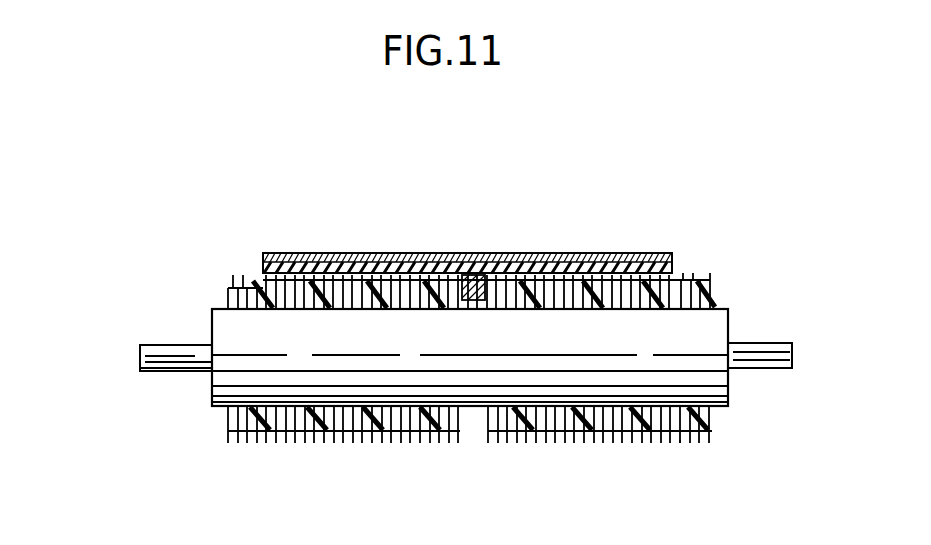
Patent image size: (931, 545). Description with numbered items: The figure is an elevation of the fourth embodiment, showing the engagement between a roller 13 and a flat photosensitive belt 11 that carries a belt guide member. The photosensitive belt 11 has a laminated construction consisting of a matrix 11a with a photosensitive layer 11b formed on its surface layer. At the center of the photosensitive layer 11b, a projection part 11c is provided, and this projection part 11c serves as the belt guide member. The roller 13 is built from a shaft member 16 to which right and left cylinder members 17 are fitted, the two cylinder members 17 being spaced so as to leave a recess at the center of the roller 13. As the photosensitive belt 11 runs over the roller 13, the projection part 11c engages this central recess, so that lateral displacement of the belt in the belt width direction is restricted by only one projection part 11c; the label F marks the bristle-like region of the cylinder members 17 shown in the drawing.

The photosensitive belt 11 is at (352, 248).
The matrix 11a is at (665, 256).
The photosensitive layer 11b is at (673, 270).
The projection part 11c is at (450, 270).
The roller 13 is at (192, 304).
The shaft member 16 is at (223, 333).
The cylinder members 17 is at (228, 429).
The bristle fibers F is at (688, 432).